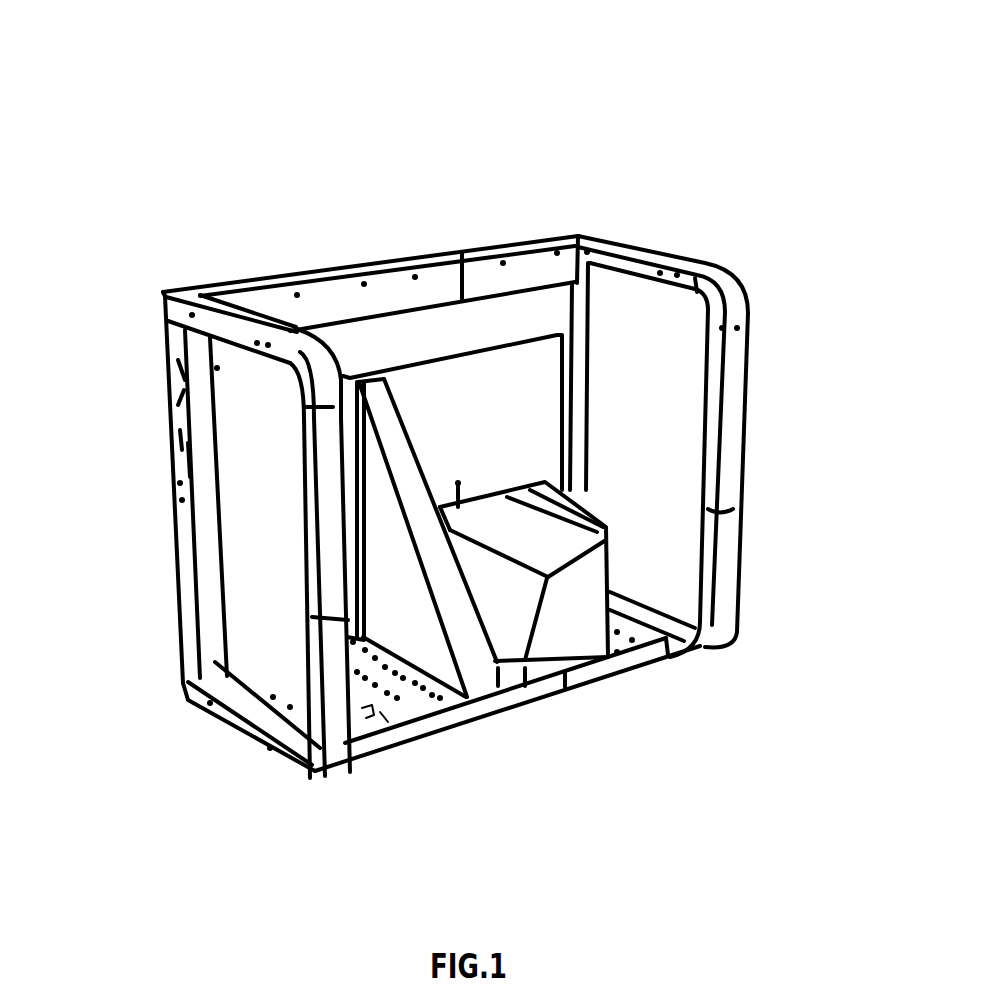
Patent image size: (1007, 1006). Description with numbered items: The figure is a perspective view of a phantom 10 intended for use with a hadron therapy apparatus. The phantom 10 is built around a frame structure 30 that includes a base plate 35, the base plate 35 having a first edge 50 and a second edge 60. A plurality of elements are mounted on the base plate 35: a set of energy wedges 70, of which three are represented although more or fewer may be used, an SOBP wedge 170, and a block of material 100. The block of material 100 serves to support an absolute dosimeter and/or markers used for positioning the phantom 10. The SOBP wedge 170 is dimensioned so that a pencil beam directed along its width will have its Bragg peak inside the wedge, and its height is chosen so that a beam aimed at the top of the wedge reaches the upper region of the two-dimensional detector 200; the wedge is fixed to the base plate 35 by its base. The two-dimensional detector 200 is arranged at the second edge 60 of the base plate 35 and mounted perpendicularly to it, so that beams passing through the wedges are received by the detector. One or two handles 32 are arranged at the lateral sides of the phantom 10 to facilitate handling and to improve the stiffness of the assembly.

The phantom 10 is at (426, 158).
The frame structure 30 is at (200, 537).
The handles 32 is at (733, 405).
The base plate 35 is at (403, 717).
The first edge 50 is at (365, 762).
The second edge 60 is at (253, 662).
The energy wedges 70 is at (546, 590).
The block of material 100 is at (558, 490).
The SOBP wedge 170 is at (490, 635).
The 2D detector 200 is at (455, 390).